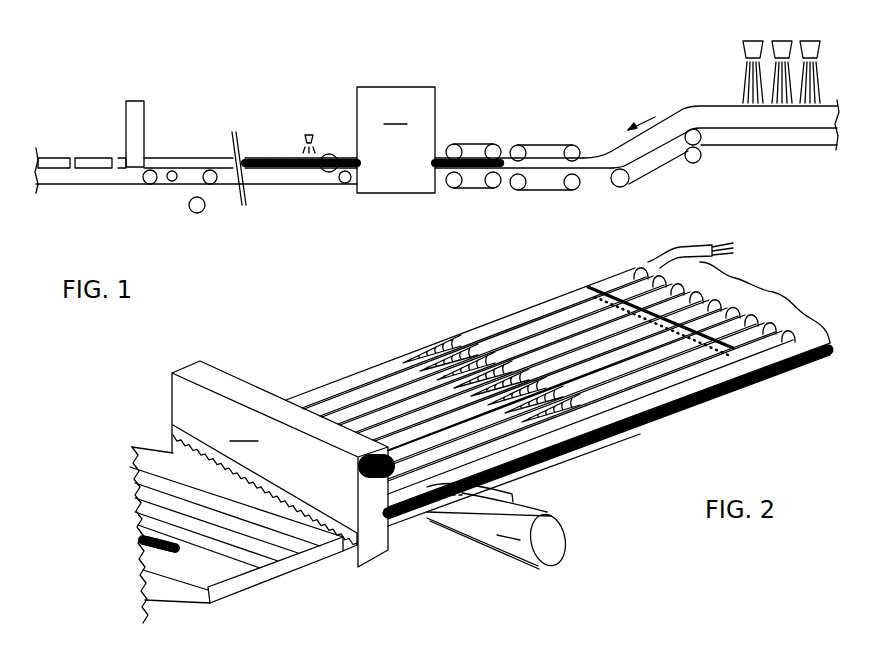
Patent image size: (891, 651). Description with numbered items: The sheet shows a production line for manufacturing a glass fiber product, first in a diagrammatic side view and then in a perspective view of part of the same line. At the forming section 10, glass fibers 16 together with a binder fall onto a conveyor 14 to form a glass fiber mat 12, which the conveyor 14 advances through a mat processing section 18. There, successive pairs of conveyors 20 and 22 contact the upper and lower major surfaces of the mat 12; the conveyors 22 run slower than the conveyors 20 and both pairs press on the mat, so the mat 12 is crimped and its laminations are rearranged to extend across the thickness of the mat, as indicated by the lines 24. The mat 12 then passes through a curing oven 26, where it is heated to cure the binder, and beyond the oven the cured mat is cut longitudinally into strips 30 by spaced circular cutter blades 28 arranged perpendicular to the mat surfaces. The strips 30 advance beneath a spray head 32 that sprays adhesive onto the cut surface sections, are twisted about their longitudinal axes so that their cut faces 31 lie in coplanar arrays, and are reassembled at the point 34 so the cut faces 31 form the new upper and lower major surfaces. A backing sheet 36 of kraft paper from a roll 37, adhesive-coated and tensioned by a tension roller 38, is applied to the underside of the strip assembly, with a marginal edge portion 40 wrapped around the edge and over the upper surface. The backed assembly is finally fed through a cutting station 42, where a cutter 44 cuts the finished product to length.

In FIG. 1, the forming section 10 is at (712, 53).
In FIG. 1, the glass fiber mat 12 is at (707, 106).
In FIG. 2, the glass fiber mat 12 is at (756, 290).
In FIG. 1, the conveyor 14 is at (742, 146).
In FIG. 1, the glass fibers 16 is at (750, 82).
In FIG. 1, the mat processing section 18 is at (513, 103).
In FIG. 1, the conveyors 20 is at (550, 145).
In FIG. 1, the conveyors 22 is at (473, 144).
In FIG. 1, the lines 24 is at (468, 172).
In FIG. 2, the lines 24 is at (273, 553).
In FIG. 1, the curing oven 26 is at (396, 140).
In FIG. 1, the circular cutter blades 28 is at (338, 182).
In FIG. 2, the circular cutter blades 28 is at (690, 245).
In FIG. 2, the strips 30 is at (647, 407).
In FIG. 2, the cut face 31 is at (593, 428).
In FIG. 1, the spray head 32 is at (313, 139).
In FIG. 2, the spray head 32 is at (597, 285).
In FIG. 2, the reassembly point 34 is at (393, 343).
In FIG. 1, the backing sheet 36 is at (179, 172).
In FIG. 2, the backing sheet 36 is at (514, 497).
In FIG. 1, the roll 37 is at (195, 212).
In FIG. 2, the roll 37 is at (560, 541).
In FIG. 1, the tension roller 38 is at (165, 181).
In FIG. 2, the tension roller 38 is at (538, 504).
In FIG. 2, the marginal edge portion 40 is at (397, 518).
In FIG. 1, the cutting station 42 is at (137, 127).
In FIG. 2, the cutting station 42 is at (280, 464).
In FIG. 2, the cutter 44 is at (297, 490).